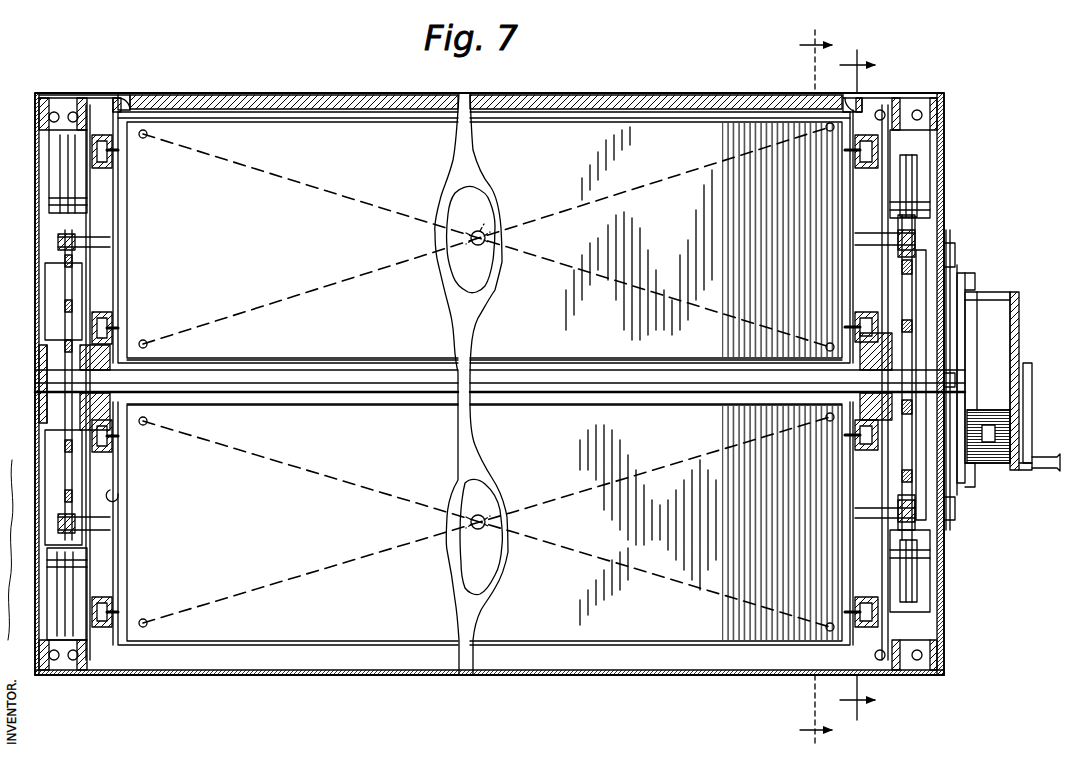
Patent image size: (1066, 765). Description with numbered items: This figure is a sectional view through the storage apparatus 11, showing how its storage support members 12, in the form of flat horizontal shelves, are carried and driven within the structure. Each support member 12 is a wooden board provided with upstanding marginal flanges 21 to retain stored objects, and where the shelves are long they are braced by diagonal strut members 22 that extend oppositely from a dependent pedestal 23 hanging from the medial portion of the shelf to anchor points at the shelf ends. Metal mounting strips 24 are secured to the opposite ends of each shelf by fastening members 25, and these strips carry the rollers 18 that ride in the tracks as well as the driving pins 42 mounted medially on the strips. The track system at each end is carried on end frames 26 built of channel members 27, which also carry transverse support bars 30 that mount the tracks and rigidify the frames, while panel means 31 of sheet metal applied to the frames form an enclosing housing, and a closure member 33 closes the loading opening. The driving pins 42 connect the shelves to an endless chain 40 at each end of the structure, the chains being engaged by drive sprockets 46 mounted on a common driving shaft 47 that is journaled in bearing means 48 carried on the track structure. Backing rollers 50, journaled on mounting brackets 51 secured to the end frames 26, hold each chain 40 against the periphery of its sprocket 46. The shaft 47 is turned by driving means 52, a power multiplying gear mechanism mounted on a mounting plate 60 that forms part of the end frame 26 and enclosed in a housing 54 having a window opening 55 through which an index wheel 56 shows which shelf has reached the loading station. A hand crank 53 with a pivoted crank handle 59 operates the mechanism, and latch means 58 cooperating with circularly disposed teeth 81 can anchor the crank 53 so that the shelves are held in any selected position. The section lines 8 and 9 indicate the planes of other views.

The section line 8- 8 is at (805, 387).
The section line 9- 9 is at (848, 385).
The storage apparatus 11 is at (944, 675).
The storage support member 12 is at (255, 140).
The roller 18 is at (112, 152).
The marginal flange 21 is at (596, 405).
The diagonal strut member 22 is at (316, 195).
The dependent pedestal 23 is at (485, 230).
The metal mounting strip 24 is at (118, 208).
The fastening member 25 is at (850, 582).
The end frame 26 is at (47, 93).
The channel member 27 is at (916, 95).
The support bar 30 is at (90, 194).
The panel means 31 is at (586, 675).
The closure member 33 is at (341, 93).
The endless chain 40 is at (62, 246).
The driving pin 42 is at (95, 250).
The drive sprocket 46 is at (68, 298).
The driving shaft 47 is at (38, 382).
The bearing means 48 is at (120, 396).
The backing roller 50 is at (62, 192).
The mounting bracket 51 is at (900, 149).
The driving means 52 is at (982, 264).
The hand crank 53 is at (1032, 447).
The housing 54 is at (1002, 472).
The window opening 55 is at (984, 424).
The index wheel 56 is at (990, 424).
The latch means 58 is at (1028, 470).
The crank handle 59 is at (1053, 470).
The mounting plate 60 is at (962, 349).
The teeth 81 is at (1016, 297).